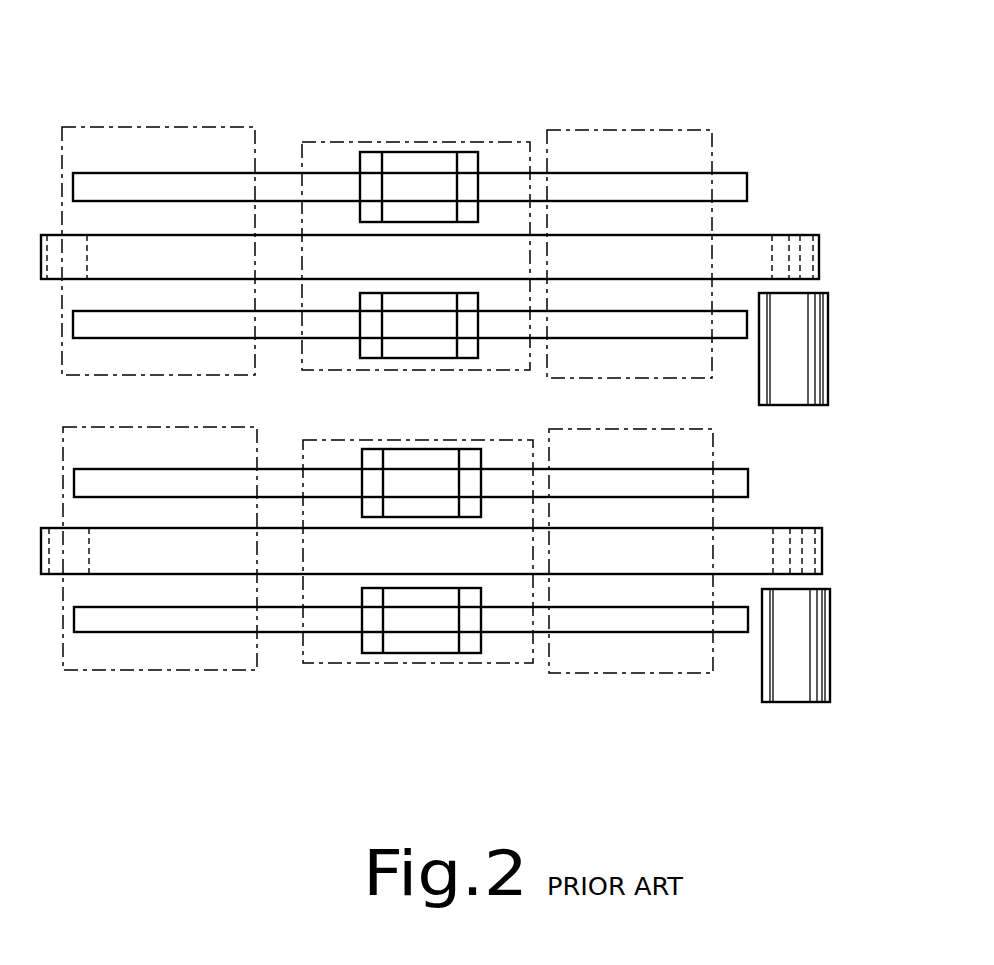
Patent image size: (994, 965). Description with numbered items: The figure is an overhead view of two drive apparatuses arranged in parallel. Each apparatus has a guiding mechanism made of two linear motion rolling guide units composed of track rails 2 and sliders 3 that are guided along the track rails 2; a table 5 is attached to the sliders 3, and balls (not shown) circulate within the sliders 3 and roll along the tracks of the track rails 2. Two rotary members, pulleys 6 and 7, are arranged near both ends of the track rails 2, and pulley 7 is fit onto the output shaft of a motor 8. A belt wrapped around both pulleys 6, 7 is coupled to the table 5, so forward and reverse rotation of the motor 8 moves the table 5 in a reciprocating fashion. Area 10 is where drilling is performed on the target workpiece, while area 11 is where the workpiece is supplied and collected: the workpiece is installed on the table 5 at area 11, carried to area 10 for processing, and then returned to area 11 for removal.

The track rail 2 is at (733, 183).
The slider 3 is at (440, 162).
The table 5 is at (345, 143).
The pulley 6 is at (56, 236).
The pulley 7 is at (803, 240).
The motor 8 is at (798, 390).
The drilling area 10 is at (158, 127).
The supply and collection area 11 is at (633, 130).